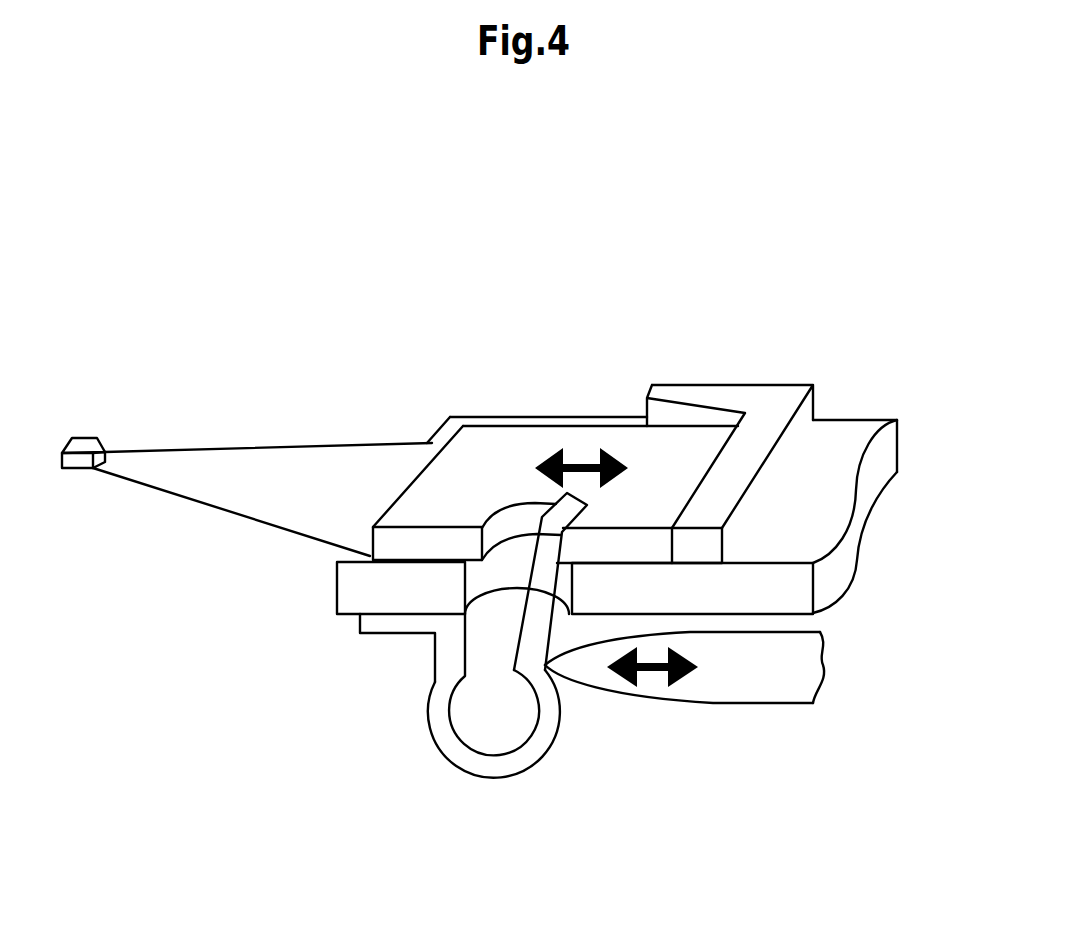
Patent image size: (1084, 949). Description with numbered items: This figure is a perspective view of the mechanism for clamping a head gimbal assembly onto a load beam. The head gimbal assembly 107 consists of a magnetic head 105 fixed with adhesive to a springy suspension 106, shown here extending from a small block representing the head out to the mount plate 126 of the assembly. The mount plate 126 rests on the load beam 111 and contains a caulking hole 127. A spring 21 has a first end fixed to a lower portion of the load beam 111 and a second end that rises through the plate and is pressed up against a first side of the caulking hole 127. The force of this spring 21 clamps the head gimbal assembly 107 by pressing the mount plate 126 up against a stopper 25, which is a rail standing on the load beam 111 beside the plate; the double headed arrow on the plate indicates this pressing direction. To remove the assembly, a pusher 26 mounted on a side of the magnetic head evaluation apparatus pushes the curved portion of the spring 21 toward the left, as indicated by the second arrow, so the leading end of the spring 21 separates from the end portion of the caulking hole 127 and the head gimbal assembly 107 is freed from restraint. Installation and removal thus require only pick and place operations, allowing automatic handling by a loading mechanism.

The head gimbal assembly 107 is at (308, 398).
The magnetic head 105 is at (75, 462).
The suspension 106 is at (268, 466).
The mount plate 126 is at (462, 450).
The caulking hole 127 is at (512, 512).
The stopper 25 is at (764, 421).
The load beam 111 is at (823, 510).
The spring 21 is at (440, 727).
The pusher 26 is at (752, 675).